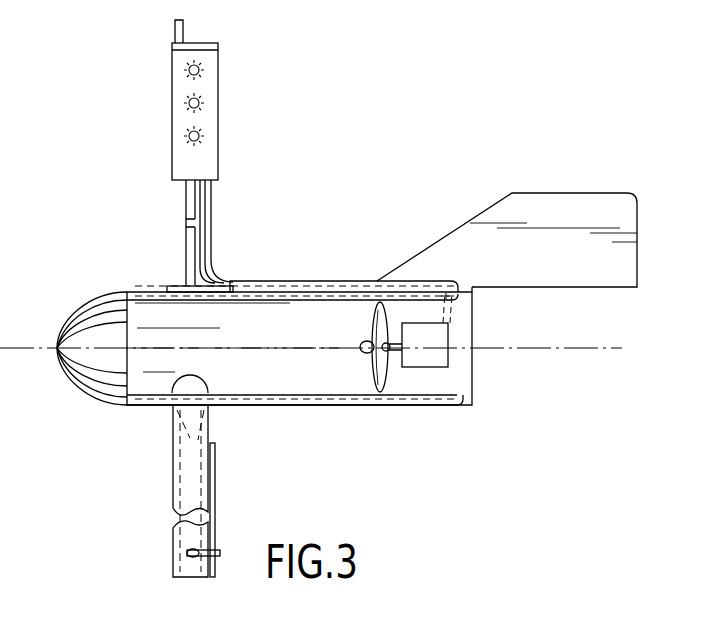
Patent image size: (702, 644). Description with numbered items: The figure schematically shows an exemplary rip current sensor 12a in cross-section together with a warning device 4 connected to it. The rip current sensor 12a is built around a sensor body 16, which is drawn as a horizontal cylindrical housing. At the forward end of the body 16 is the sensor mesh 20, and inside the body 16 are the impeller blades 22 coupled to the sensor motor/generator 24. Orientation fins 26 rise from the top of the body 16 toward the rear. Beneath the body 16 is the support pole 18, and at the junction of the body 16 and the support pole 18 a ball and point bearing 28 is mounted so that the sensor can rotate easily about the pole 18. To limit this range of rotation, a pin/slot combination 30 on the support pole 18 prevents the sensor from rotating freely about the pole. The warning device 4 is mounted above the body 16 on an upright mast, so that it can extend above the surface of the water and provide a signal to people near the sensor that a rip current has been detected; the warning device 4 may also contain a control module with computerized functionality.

The warning device 4 is at (236, 143).
The rip current sensor 12a is at (453, 176).
The sensor body 16 is at (303, 387).
The support pole 18 is at (201, 468).
The sensor mesh 20 is at (83, 392).
The impeller blades 22 is at (372, 370).
The sensor motor/generator 24 is at (427, 340).
The orientation fins 26 is at (570, 193).
The ball and point bearing 28 is at (188, 434).
The pin/slot combination 30 is at (190, 558).